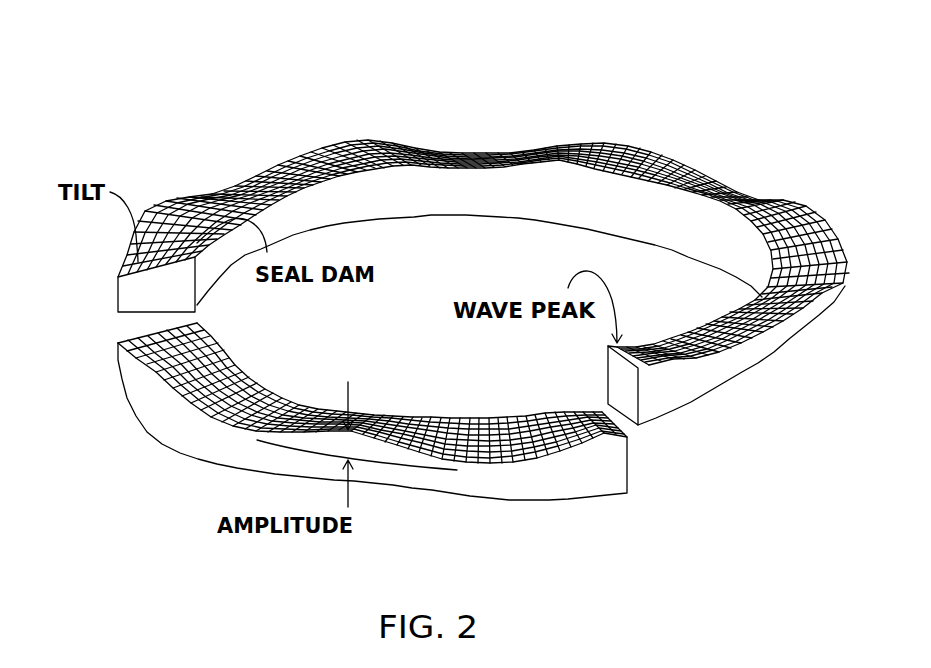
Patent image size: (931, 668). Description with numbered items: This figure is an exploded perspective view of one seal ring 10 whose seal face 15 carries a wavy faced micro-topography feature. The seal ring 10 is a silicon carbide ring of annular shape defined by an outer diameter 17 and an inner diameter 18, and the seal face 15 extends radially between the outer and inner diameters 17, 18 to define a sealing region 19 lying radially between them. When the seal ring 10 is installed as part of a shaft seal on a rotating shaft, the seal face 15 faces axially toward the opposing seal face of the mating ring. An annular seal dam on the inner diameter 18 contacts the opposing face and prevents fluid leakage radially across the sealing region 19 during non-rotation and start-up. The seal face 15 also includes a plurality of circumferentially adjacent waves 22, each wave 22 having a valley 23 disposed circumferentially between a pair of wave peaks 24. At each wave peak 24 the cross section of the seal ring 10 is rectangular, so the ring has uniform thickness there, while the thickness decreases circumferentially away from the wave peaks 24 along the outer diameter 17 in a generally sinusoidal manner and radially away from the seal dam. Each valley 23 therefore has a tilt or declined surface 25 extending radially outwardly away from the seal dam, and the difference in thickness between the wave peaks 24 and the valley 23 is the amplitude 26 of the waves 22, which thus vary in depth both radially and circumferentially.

The seal ring 10 is at (452, 286).
The seal face 15 is at (222, 407).
The outer diameter 17 is at (750, 382).
The inner diameter 18 is at (560, 187).
The sealing region 19 is at (177, 197).
The waves 22 is at (292, 128).
The valley 23 is at (742, 182).
The wave peaks 24 is at (637, 152).
The tilt or declined surface 25 is at (120, 260).
The amplitude 26 is at (355, 483).